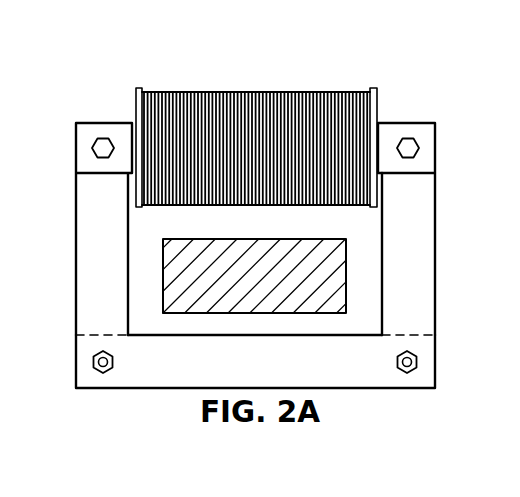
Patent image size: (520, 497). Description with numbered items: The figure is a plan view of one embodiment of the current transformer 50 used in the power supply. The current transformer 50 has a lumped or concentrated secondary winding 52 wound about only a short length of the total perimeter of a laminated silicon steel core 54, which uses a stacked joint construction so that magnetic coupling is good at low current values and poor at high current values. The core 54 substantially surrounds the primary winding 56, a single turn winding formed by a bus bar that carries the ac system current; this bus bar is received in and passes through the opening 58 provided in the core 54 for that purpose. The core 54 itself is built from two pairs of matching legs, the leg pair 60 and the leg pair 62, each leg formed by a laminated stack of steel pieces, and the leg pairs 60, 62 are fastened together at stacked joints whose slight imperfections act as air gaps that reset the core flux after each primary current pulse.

The current transformer 50 is at (383, 415).
The secondary winding 52 is at (263, 92).
The laminated silicon steel core 54 is at (437, 353).
The primary winding 56 is at (287, 239).
The opening 58 is at (382, 298).
The leg pair 60 is at (75, 292).
The leg pair 62 is at (103, 123).